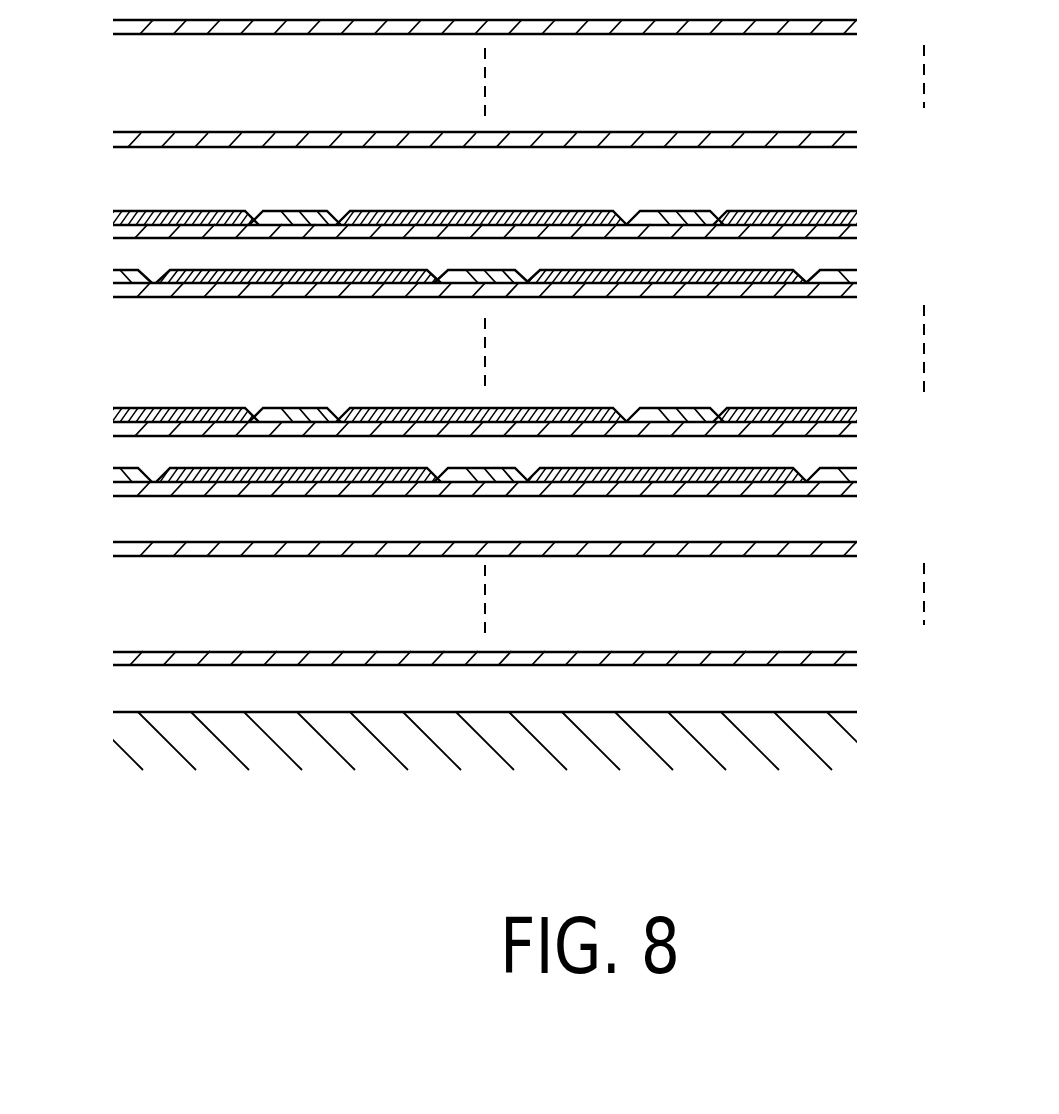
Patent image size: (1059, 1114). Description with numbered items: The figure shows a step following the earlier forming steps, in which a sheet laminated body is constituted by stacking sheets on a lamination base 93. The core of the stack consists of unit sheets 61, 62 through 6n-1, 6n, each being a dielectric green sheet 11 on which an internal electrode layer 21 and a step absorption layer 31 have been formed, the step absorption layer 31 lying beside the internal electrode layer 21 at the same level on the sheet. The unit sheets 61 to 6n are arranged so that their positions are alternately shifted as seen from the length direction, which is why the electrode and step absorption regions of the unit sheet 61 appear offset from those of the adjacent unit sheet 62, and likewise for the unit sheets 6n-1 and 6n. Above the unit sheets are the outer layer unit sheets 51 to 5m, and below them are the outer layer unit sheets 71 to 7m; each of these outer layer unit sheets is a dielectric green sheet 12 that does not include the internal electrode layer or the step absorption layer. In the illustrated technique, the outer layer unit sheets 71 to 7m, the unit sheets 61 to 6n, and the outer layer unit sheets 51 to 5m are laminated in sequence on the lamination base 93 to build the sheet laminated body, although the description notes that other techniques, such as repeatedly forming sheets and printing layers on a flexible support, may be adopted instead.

The dielectric green sheet 11 is at (497, 206).
The dielectric green sheet 12 is at (498, 284).
The internal electrode layer 21 is at (487, 213).
The step absorption layer 31 is at (672, 213).
The outer layer unit sheet 51 is at (522, 22).
The outer layer unit sheet 5m is at (526, 135).
The unit sheet 61 is at (522, 203).
The unit sheet 62 is at (522, 278).
The unit sheet 6n-1 is at (537, 417).
The unit sheet 6n is at (523, 477).
The outer layer unit sheet 71 is at (522, 540).
The outer layer unit sheet 7m is at (526, 653).
The lamination base 93 is at (483, 765).